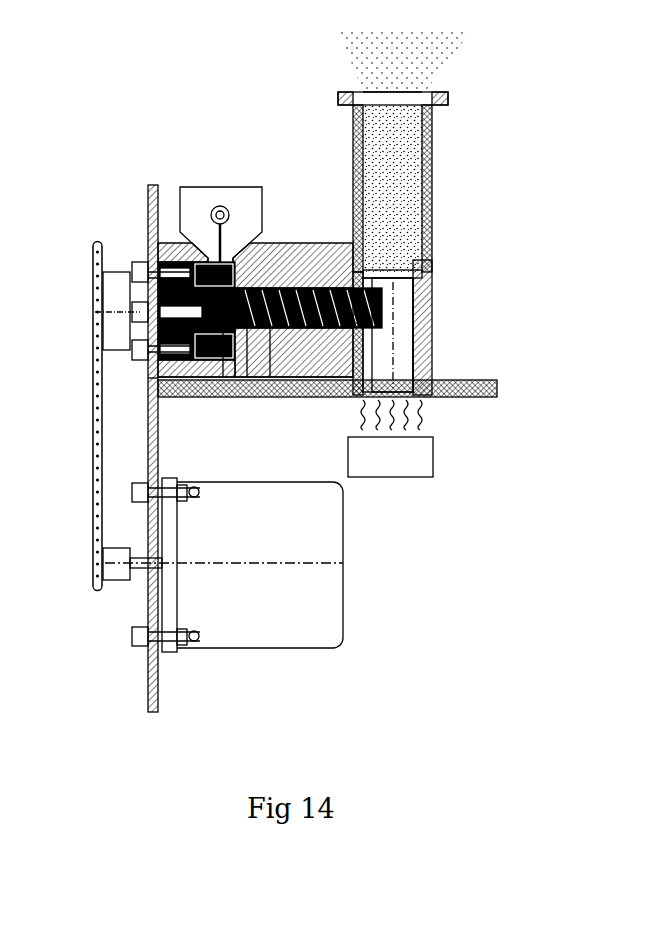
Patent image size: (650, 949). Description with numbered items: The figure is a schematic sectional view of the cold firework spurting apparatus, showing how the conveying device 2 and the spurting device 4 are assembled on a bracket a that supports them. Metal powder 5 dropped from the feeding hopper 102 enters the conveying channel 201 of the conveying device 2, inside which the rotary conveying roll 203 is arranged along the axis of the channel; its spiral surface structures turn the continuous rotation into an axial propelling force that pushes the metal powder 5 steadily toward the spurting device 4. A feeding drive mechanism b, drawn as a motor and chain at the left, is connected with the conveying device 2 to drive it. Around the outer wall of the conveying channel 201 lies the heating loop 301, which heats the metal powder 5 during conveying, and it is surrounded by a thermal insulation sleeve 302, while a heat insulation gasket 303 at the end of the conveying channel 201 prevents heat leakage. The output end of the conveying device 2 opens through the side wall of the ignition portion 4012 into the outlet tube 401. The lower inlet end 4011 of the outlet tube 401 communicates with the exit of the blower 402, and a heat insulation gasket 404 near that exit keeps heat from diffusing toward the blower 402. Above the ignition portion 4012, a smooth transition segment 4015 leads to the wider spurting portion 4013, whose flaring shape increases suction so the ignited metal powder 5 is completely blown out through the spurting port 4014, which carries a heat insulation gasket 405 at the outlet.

The feeding hopper 102 is at (202, 235).
The metal powder 5 is at (377, 77).
The spurting device 4 is at (352, 157).
The thermal insulation sleeve 302 is at (282, 262).
The conveying device 2 is at (222, 364).
The conveying channel 201 is at (222, 365).
The rotary conveying roll 203 is at (270, 350).
The heating loop 301 is at (318, 352).
The heat insulation gasket 303 is at (128, 333).
The feeding drive mechanism b is at (240, 583).
The heat insulation gasket near the exit of the blower 404 is at (435, 383).
The outlet tube 401 is at (453, 221).
The heat insulation gasket at the outlet 405 is at (448, 100).
The spurting port 4014 is at (415, 88).
The spurting portion 4013 is at (430, 183).
The smooth transition segment 4015 is at (434, 256).
The ignition portion 4012 is at (400, 327).
The inlet end 4011 is at (434, 327).
The blower 402 is at (400, 453).
The bracket a is at (148, 380).